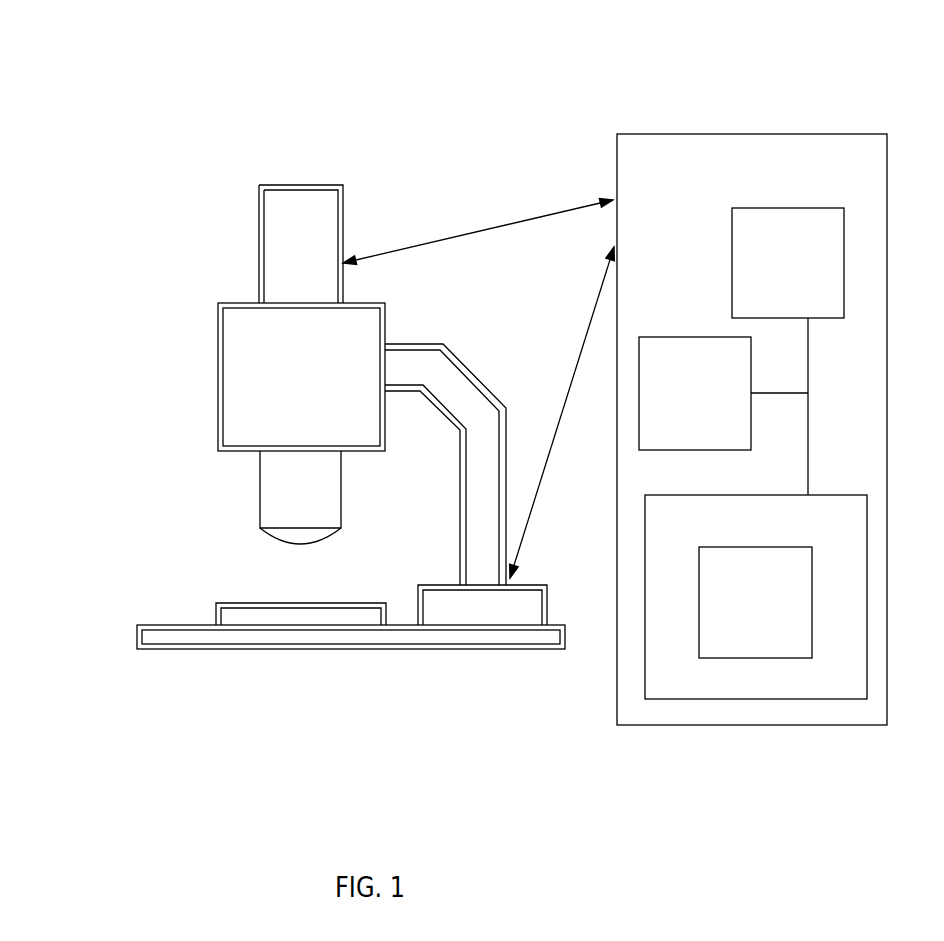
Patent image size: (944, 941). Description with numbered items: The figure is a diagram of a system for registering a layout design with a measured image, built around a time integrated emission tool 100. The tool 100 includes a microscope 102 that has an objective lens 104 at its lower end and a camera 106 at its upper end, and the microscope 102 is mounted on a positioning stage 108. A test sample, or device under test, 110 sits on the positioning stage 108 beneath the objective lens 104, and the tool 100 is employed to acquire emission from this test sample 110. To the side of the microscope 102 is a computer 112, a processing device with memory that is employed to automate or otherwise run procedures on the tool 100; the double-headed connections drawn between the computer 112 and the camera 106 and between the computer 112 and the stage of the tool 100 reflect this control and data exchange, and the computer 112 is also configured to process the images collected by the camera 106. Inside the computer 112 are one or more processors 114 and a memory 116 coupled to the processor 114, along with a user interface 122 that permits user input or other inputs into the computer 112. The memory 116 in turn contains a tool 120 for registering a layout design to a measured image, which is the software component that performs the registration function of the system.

The time integrated emission tool 100 is at (482, 28).
The microscope 102 is at (273, 390).
The objective lens 104 is at (261, 505).
The camera 106 is at (257, 238).
The positioning stage 108 is at (350, 658).
The test sample (device under test, DUT) 110 is at (227, 610).
The computer 112 is at (752, 429).
The processor 114 is at (804, 290).
The memory 116 is at (756, 597).
The tool for registering a layout design to a measured image 120 is at (773, 631).
The user interface 122 is at (710, 422).